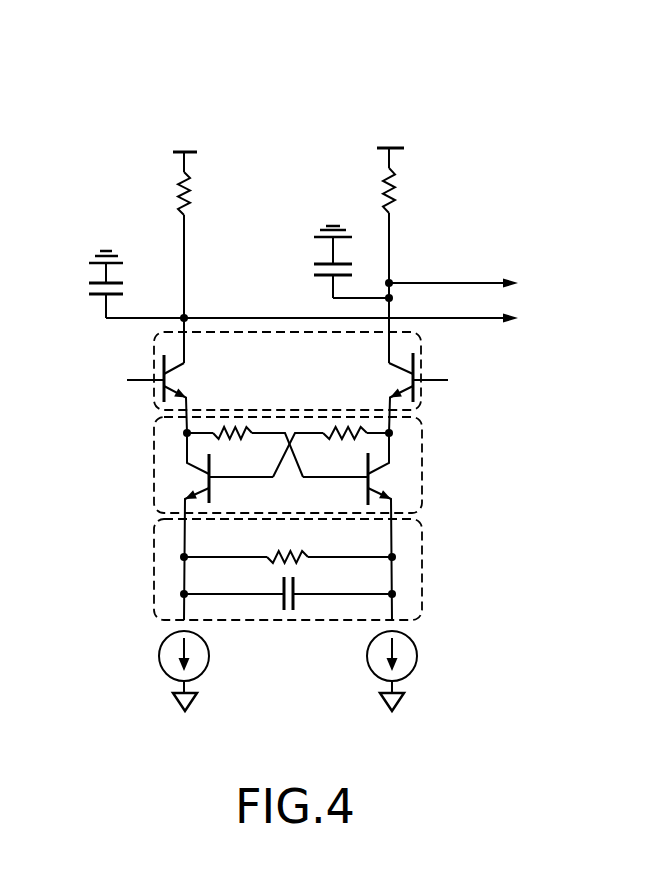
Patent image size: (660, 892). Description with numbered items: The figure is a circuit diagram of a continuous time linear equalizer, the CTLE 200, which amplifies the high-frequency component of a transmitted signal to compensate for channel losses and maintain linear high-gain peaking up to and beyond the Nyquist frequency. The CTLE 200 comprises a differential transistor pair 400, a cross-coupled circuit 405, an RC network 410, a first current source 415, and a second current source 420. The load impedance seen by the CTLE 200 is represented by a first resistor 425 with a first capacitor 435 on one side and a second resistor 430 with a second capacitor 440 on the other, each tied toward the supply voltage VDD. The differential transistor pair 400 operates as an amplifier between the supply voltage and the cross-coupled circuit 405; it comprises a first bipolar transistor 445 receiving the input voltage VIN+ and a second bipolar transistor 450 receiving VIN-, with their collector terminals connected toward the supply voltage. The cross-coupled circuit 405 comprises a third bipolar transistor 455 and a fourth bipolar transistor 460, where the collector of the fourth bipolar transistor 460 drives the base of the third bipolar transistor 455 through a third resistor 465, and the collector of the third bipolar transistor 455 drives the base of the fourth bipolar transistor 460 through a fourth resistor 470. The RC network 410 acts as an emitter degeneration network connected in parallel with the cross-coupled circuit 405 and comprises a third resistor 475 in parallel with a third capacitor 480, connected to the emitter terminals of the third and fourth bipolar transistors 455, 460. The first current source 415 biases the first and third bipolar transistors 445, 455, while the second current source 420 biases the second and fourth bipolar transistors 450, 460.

The CTLE 200 is at (530, 100).
The differential transistor pair 400 is at (421, 347).
The cross-coupled circuit 405 is at (422, 490).
The RC network 410 is at (422, 560).
The first current source 415 is at (163, 661).
The second current source 420 is at (418, 660).
The first resistor 425 is at (191, 201).
The second resistor 430 is at (394, 198).
The first capacitor 435 is at (95, 294).
The second capacitor 440 is at (316, 276).
The first bipolar transistor 445 is at (187, 369).
The second bipolar transistor 450 is at (398, 367).
The third bipolar transistor 455 is at (187, 467).
The fourth bipolar transistor 460 is at (393, 466).
The third resistor 465 is at (344, 439).
The fourth resistor 470 is at (222, 440).
The third resistor 475 is at (288, 550).
The third capacitor 480 is at (296, 585).